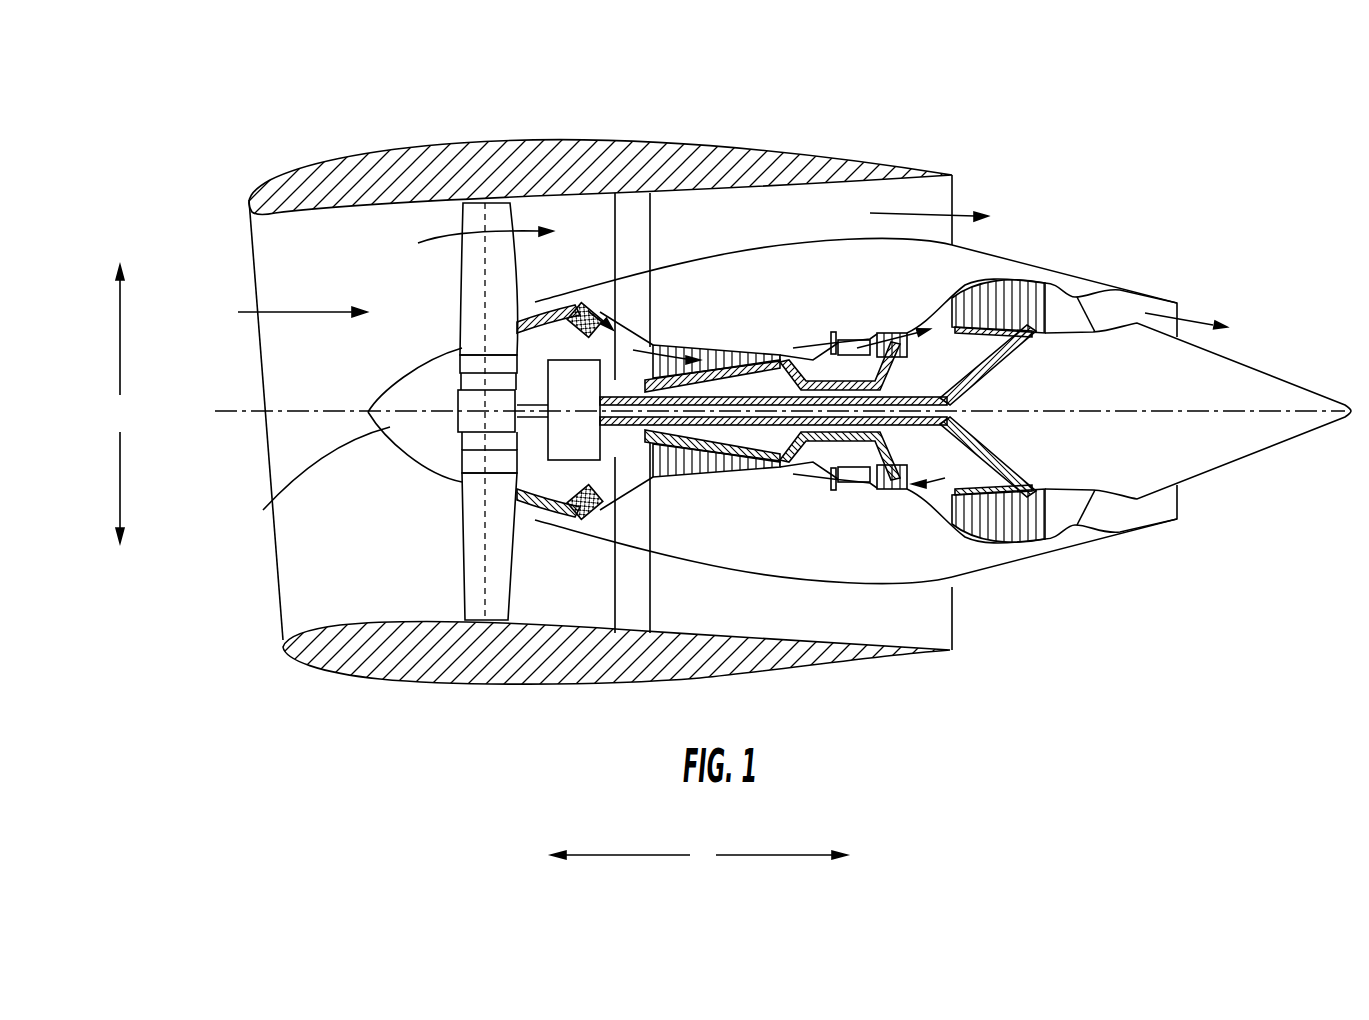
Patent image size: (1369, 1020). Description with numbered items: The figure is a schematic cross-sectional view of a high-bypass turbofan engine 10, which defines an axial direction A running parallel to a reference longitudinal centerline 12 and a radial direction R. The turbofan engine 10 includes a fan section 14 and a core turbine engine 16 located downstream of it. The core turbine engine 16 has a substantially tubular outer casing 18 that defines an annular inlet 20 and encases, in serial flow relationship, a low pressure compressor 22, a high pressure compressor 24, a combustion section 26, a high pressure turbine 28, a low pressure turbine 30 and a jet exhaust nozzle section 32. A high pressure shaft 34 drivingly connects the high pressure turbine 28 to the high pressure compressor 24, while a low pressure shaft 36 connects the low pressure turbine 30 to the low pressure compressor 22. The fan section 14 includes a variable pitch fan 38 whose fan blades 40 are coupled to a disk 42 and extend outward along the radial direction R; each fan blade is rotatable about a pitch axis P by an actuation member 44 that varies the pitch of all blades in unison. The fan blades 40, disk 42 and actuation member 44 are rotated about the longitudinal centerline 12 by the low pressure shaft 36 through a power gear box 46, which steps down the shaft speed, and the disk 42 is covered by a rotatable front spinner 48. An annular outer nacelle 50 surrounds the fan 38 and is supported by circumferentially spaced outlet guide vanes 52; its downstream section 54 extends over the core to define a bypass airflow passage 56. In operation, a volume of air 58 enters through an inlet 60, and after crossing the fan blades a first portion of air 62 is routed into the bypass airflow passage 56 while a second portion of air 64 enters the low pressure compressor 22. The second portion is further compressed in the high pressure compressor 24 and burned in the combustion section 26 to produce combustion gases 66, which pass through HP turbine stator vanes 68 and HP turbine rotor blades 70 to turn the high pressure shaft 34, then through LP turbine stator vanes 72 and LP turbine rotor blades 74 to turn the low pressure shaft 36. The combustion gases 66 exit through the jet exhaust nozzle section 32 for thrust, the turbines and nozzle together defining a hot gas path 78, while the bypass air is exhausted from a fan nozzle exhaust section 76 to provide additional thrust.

The turbofan engine 10 is at (1093, 157).
The longitudinal centerline 12 is at (1117, 413).
The fan section 14 is at (503, 108).
The core turbine engine 16 is at (820, 307).
The outer casing 18 is at (810, 580).
The annular inlet 20 is at (563, 515).
The low pressure compressor 22 is at (612, 488).
The high pressure compressor 24 is at (678, 463).
The combustion section 26 is at (852, 477).
The high pressure turbine 28 is at (1003, 473).
The low pressure turbine 30 is at (1035, 533).
The jet exhaust nozzle section 32 is at (1095, 517).
The high pressure shaft 34 is at (857, 378).
The low pressure shaft 36 is at (977, 382).
The variable pitch fan 38 is at (425, 464).
The fan blades 40 is at (458, 563).
The disk 42 is at (477, 367).
The actuation member 44 is at (457, 395).
The power gear box 46 is at (615, 380).
The front spinner 48 is at (273, 505).
The outer nacelle 50 is at (507, 687).
The outlet guide vanes 52 is at (652, 222).
The downstream section 54 is at (877, 160).
The bypass airflow passage 56 is at (774, 240).
The volume of air 58 is at (300, 312).
The inlet 60 is at (278, 628).
The first portion of air 62 is at (883, 213).
The second portion of air 64 is at (540, 303).
The combustion gases 66 is at (995, 287).
The HP turbine stator vanes 68 is at (867, 483).
The HP turbine rotor blades 70 is at (885, 473).
The LP turbine stator vanes 72 is at (972, 528).
The LP turbine rotor blades 74 is at (970, 527).
The fan nozzle exhaust section 76 is at (940, 198).
The hot gas path 78 is at (943, 313).
The pitch axis P is at (493, 218).
The radial direction R is at (122, 404).
The axial direction A is at (699, 855).